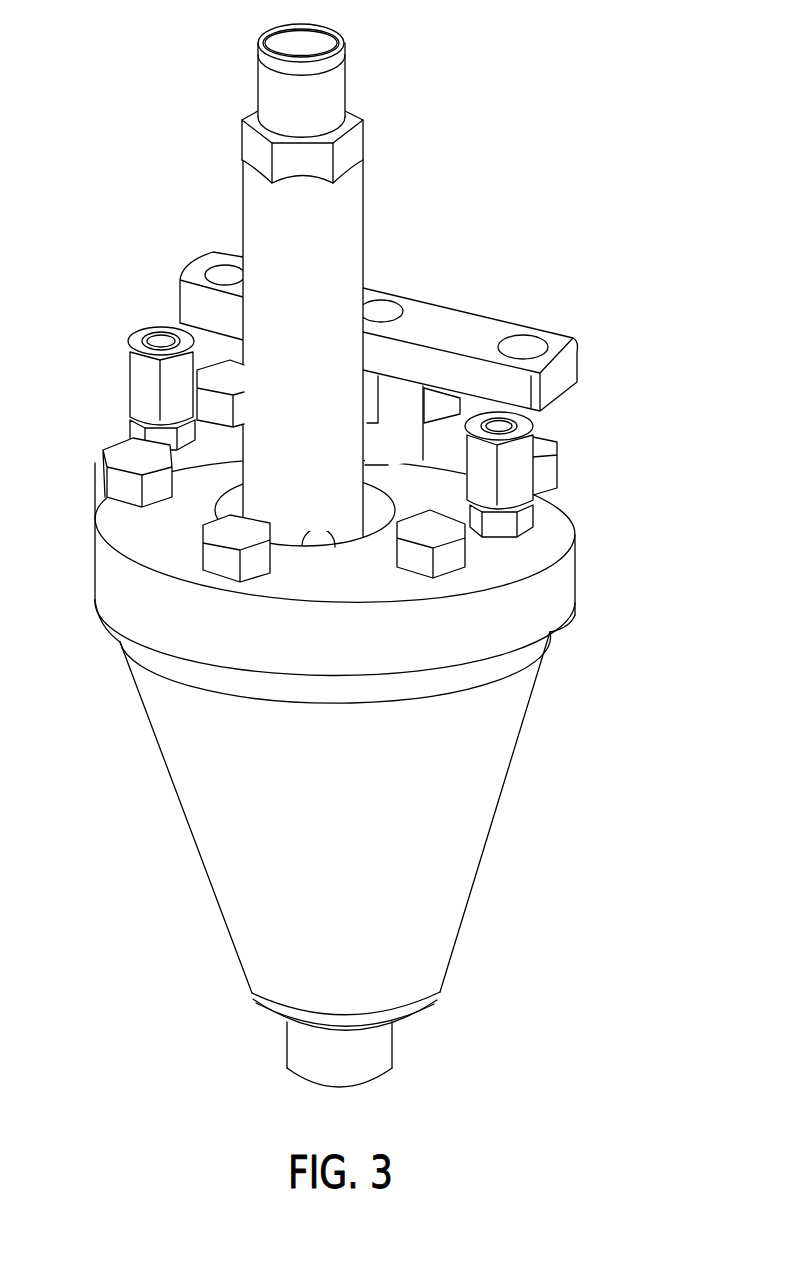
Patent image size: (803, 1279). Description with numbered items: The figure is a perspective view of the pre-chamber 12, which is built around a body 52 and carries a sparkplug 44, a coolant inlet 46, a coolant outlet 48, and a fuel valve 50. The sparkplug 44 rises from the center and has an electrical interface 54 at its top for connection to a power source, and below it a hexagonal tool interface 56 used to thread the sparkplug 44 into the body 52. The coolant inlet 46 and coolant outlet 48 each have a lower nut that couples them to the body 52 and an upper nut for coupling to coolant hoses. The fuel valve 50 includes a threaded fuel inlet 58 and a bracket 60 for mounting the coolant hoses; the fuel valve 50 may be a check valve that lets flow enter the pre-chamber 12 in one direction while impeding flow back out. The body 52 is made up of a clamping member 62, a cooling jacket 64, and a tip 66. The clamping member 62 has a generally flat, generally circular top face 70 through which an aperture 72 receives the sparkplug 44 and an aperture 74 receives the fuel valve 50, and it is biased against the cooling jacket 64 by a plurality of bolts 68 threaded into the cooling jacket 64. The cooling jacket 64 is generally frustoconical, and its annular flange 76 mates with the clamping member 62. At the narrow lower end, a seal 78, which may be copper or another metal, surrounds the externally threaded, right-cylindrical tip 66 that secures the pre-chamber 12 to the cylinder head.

The pre-chamber 12 is at (376, 564).
The sparkplug 44 is at (350, 215).
The coolant inlet 46 is at (145, 382).
The coolant outlet 48 is at (518, 480).
The fuel valve 50 is at (401, 371).
The body 52 is at (376, 777).
The electrical interface 54 is at (332, 91).
The hexagonal tool interface 56 is at (347, 146).
The threaded fuel inlet 58 is at (383, 308).
The bracket 60 is at (401, 324).
The clamping member 62 is at (556, 537).
The cooling jacket 64 is at (465, 791).
The tip 66 is at (375, 1055).
The bolts 68 is at (125, 453).
The top face 70 is at (122, 517).
The aperture 72 is at (335, 548).
The aperture 74 is at (388, 466).
The annular flange 76 is at (552, 607).
The seal 78 is at (415, 1001).